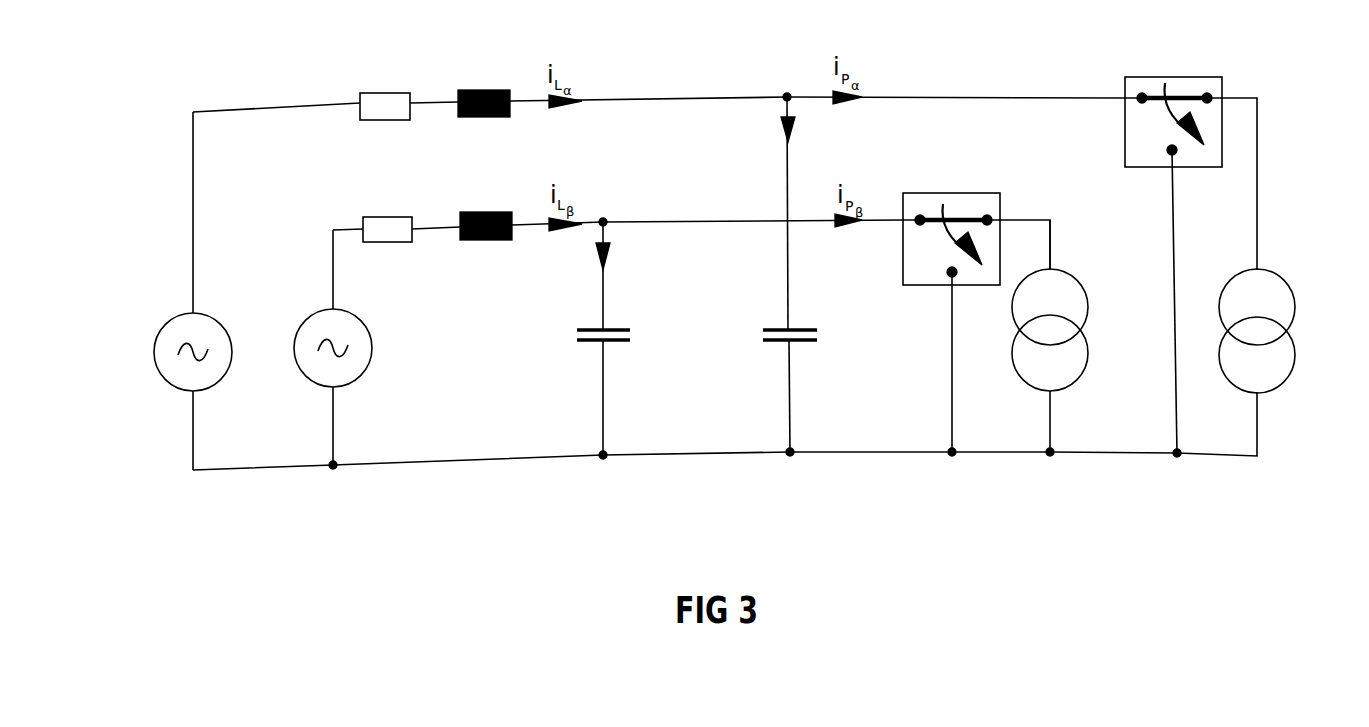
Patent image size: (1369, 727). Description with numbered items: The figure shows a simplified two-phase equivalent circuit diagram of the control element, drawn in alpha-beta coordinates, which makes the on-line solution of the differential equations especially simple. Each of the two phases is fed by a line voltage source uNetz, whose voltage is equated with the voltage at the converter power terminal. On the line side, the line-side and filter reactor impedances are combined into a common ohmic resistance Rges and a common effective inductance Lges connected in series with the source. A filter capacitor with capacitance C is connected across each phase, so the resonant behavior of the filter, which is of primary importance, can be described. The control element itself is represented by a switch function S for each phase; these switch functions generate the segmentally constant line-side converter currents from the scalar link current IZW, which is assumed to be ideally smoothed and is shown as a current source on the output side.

The line-side ohmic resistance Rges is at (386, 150).
The line-side effective inductance Lges is at (485, 149).
The capacitance value of the three-phase capacitor C is at (827, 290).
The switch function S is at (1062, 247).
The line voltage uNetz is at (282, 403).
The link current IZW is at (1110, 390).